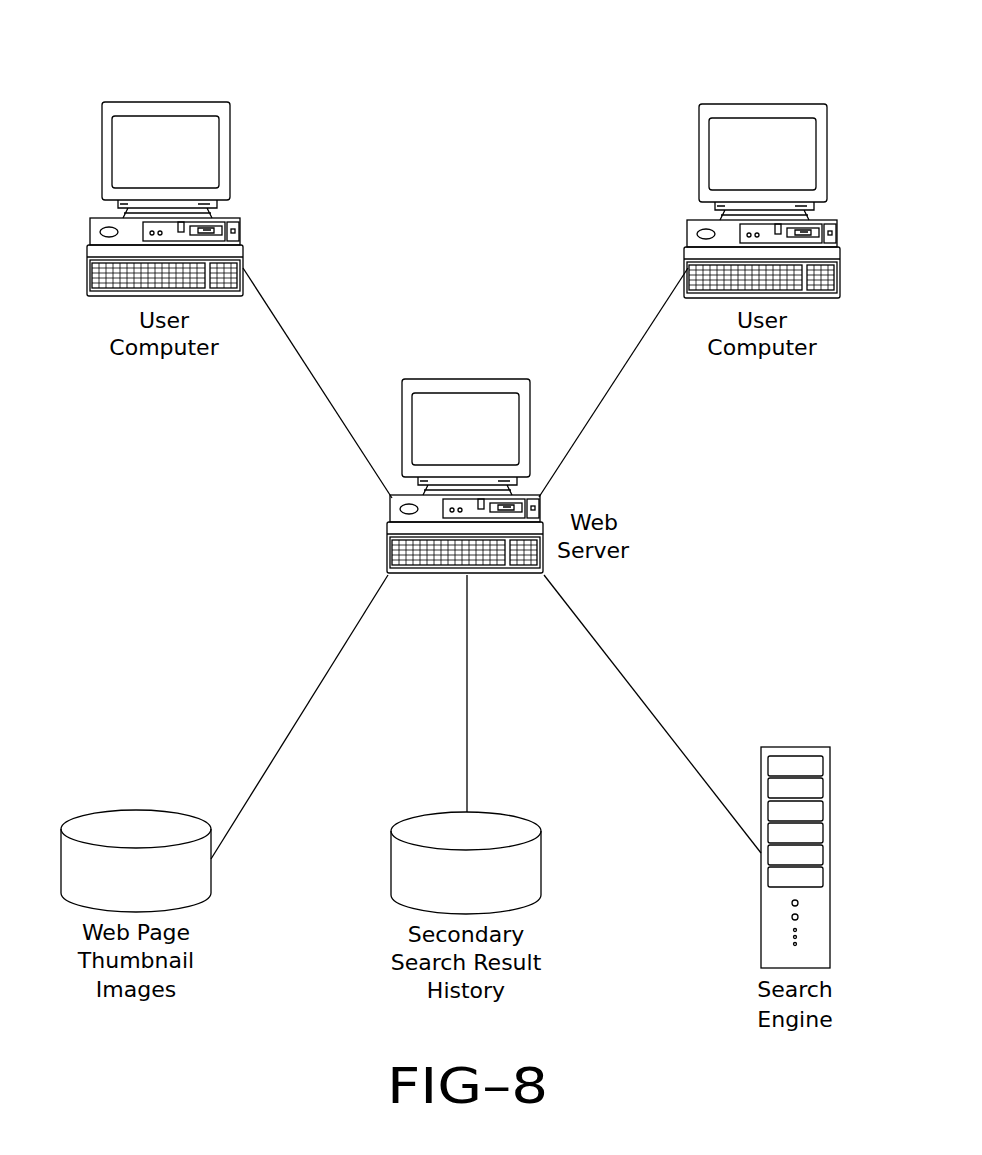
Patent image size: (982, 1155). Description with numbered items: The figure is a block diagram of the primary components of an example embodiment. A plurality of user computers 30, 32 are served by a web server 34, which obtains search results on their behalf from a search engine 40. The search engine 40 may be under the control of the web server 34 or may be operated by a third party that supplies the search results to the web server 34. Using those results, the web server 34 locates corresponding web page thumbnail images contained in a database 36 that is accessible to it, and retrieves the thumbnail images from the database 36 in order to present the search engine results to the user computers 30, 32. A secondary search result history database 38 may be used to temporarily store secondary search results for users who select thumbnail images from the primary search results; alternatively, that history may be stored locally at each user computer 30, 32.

The user computer 30 is at (152, 102).
The user computer 32 is at (788, 104).
The web server 34 is at (452, 379).
The database 36 is at (173, 810).
The secondary search result history database 38 is at (502, 812).
The search engine 40 is at (786, 747).